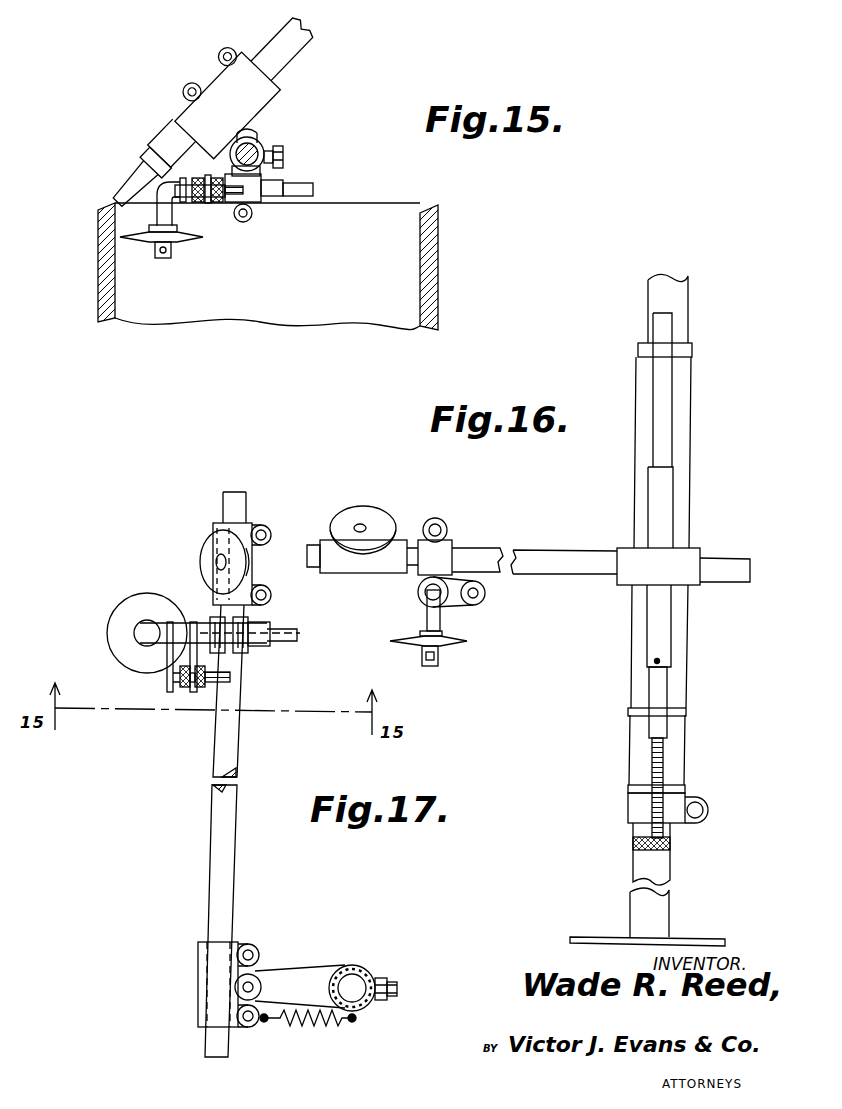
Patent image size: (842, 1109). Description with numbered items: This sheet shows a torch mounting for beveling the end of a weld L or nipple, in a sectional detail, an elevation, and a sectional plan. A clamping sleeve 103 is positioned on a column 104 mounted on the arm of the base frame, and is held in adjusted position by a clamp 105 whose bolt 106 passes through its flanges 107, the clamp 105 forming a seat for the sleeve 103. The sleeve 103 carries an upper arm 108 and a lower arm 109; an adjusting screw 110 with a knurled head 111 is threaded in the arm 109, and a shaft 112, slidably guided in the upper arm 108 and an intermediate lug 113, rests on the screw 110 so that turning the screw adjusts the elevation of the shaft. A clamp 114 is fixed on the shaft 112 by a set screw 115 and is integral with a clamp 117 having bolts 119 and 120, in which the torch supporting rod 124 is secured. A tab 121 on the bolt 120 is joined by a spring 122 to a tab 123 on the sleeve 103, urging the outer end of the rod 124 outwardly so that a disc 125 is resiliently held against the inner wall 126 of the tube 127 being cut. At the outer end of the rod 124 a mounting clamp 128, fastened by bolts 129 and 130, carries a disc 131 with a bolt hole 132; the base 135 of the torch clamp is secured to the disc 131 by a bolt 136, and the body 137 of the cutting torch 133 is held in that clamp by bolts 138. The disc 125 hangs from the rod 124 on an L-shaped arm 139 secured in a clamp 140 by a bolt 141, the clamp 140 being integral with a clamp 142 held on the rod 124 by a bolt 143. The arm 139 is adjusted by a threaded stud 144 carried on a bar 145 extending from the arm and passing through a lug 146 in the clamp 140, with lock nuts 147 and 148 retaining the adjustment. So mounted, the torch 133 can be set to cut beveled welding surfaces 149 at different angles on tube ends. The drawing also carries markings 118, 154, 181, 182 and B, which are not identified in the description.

In FIG. 16, the clamping sleeve 103 is at (636, 417).
In FIG. 16, the column 104 is at (688, 289).
In FIG. 16, the clamp 105 is at (628, 812).
In FIG. 16, the bolt 106 is at (708, 808).
In FIG. 17, the bolt 106 is at (397, 995).
In FIG. 16, the flanges 107 is at (700, 822).
In FIG. 16, the upper arm 108 is at (692, 352).
In FIG. 16, the arm 109 is at (672, 792).
In FIG. 16, the adjusting screw 110 is at (651, 765).
In FIG. 16, the knurled head 111 is at (670, 847).
In FIG. 16, the shaft 112 is at (649, 688).
In FIG. 16, the intermediate lug 113 is at (686, 708).
In FIG. 16, the clamp 114 is at (673, 493).
In FIG. 17, the clamp 114 is at (366, 970).
In FIG. 16, the set screw 115 is at (658, 660).
In FIG. 16, the clamp 117 is at (697, 558).
In FIG. 17, the clamp 117 is at (198, 966).
In FIG. 17, the pivot ear 118 is at (252, 983).
In FIG. 17, the bolt 119 is at (250, 944).
In FIG. 17, the bolt 120 is at (248, 1027).
In FIG. 17, the tab 121 is at (268, 1022).
In FIG. 17, the spring 122 is at (300, 1025).
In FIG. 17, the tab 123 is at (358, 1022).
In FIG. 15, the torch supporting rod 124 is at (228, 172).
In FIG. 16, the torch supporting rod 124 is at (546, 552).
In FIG. 17, the torch supporting rod 124 is at (218, 832).
In FIG. 15, the disc 125 is at (180, 240).
In FIG. 16, the disc 125 is at (118, 608).
In FIG. 15, the inner wall 126 is at (116, 290).
In FIG. 15, the tube 127 is at (98, 272).
In FIG. 16, the mounting clamp 128 is at (213, 528).
In FIG. 16, the bolt 129 is at (260, 525).
In FIG. 16, the bolt 130 is at (271, 596).
In FIG. 15, the disc 131 is at (262, 131).
In FIG. 16, the disc 131 is at (200, 545).
In FIG. 16, the bolt hole 132 is at (216, 562).
In FIG. 15, the cutting torch 133 is at (135, 188).
In FIG. 15, the base 135 is at (276, 83).
In FIG. 15, the bolt 136 is at (262, 125).
In FIG. 15, the body 137 is at (282, 47).
In FIG. 15, the bolts 138 is at (184, 92).
In FIG. 15, the L-shaped arm 139 is at (172, 216).
In FIG. 16, the L-shaped arm 139 is at (130, 633).
In FIG. 15, the clamp 140 is at (255, 200).
In FIG. 16, the clamp 140 is at (255, 653).
In FIG. 15, the bolt 141 is at (241, 223).
In FIG. 16, the bolt 141 is at (250, 623).
In FIG. 15, the clamp 142 is at (261, 179).
In FIG. 16, the clamp 142 is at (443, 550).
In FIG. 15, the bolt 143 is at (284, 149).
In FIG. 16, the bolt 143 is at (435, 518).
In FIG. 16, the threaded stud 144 is at (230, 680).
In FIG. 16, the bar 145 is at (165, 686).
In FIG. 16, the lug 146 is at (200, 690).
In FIG. 16, the lock nut 147 is at (184, 690).
In FIG. 16, the lock nut 148 is at (222, 690).
In FIG. 15, the beveled welding surface 149 is at (430, 212).
In FIG. 15, the ear 154 is at (228, 72).
In FIG. 16, the disc 181 is at (335, 515).
In FIG. 16, the hub 182 is at (362, 522).
In FIG. 16, the base B is at (632, 905).
In FIG. 17, the base B is at (352, 964).